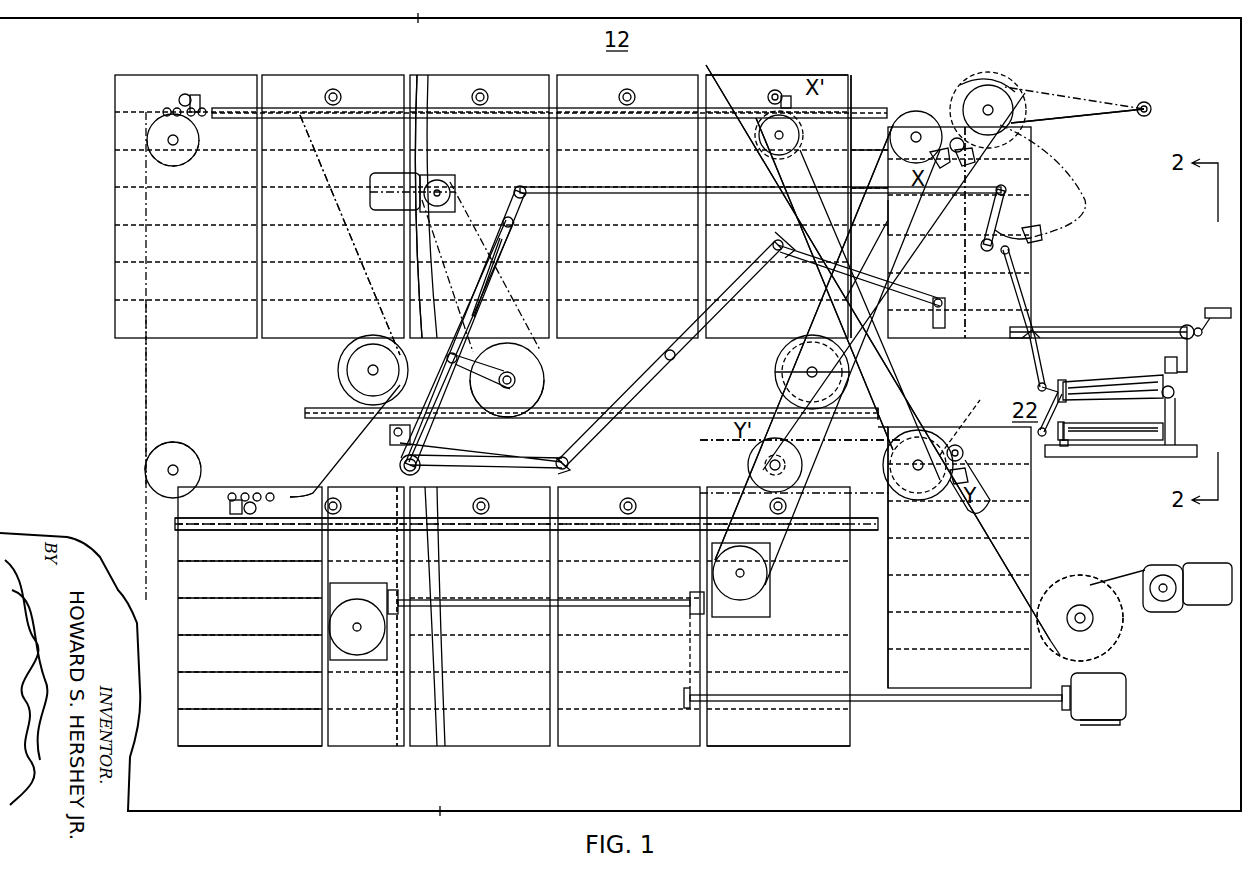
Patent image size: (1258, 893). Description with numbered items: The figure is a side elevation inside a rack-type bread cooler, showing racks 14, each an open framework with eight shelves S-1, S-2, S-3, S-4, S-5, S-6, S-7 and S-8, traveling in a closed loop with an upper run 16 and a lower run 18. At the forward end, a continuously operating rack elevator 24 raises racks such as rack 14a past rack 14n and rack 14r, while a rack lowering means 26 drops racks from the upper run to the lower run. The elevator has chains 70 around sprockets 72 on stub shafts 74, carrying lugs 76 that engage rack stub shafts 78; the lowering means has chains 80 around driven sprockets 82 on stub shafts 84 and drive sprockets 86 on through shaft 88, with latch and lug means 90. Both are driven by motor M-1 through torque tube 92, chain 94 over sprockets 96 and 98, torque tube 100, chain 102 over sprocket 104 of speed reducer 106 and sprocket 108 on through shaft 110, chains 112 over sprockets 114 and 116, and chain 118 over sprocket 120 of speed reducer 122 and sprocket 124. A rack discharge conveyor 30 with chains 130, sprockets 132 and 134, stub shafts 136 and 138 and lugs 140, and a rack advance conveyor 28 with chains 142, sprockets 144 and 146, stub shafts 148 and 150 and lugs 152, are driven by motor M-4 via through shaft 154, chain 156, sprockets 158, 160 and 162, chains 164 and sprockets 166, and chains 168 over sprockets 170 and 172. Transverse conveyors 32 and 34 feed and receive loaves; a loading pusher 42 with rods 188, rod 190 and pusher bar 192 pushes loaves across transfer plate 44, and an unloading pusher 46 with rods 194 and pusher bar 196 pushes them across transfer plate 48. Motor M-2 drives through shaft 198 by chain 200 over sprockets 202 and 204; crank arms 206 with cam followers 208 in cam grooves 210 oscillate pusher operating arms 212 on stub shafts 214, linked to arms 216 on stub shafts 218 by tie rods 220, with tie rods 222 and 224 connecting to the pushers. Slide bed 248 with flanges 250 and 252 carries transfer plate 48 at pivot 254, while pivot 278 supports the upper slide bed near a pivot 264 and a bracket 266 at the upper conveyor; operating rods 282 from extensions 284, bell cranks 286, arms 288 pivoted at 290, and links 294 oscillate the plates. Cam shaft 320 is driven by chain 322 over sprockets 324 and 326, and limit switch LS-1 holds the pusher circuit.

The racks 14 is at (825, 68).
The rack 14a is at (1022, 152).
The rack 14n is at (889, 710).
The panel 14r is at (776, 746).
The upper horizontal longitudinally extending run 16 is at (519, 103).
The lower horizontal longitudinally extending run 18 is at (587, 516).
The rack elevator 24 is at (1094, 172).
The rack lowering means 26 is at (137, 390).
The rack advance conveyor 28 is at (870, 420).
The rack discharge conveyor 30 is at (886, 101).
The upper conveyor 32 is at (1129, 375).
The lower conveyor 34 is at (1118, 441).
The loading pusher 42 is at (1080, 321).
The transfer plate 44 is at (1032, 338).
The unloading pusher 46 is at (677, 403).
The transfer plate 48 is at (1046, 432).
The endless chains 70 is at (968, 250).
The sprockets 72 is at (1010, 95).
The stub shafts 74 is at (986, 106).
The lugs 76 is at (968, 158).
The rack stub shafts 78 is at (190, 96).
The endless chains 80 is at (352, 237).
The driven sprockets 82 is at (190, 158).
The stub shafts 84 is at (168, 137).
The drive sprockets 86 is at (350, 370).
The through shaft 88 is at (368, 373).
The latch and lug means 90 is at (172, 107).
The torque tube 92 is at (972, 702).
The chain 94 is at (688, 642).
The sprocket 96 is at (684, 696).
The sprocket 98 is at (690, 598).
The torque tube 100 is at (586, 600).
The chain 102 is at (790, 535).
The sprocket 104 is at (766, 560).
The speed reducer 106 is at (770, 606).
The sprocket 108 is at (795, 355).
The through shaft 110 is at (810, 372).
The chains 112 is at (888, 222).
The sprockets 114 is at (832, 370).
The sprockets 116 is at (1000, 80).
The chain 118 is at (395, 537).
The sprocket 120 is at (378, 591).
The speed reducer 122 is at (340, 655).
The sprocket 124 is at (350, 345).
The endless chains 130 is at (882, 162).
The rearward drive sprockets 132 is at (757, 138).
The forward driven sprockets 134 is at (932, 110).
The stub shafts 136 is at (776, 140).
The stub shafts 138 is at (914, 132).
The lugs 140 is at (778, 90).
The endless chains 142 is at (810, 440).
The rearward driven sprockets 144 is at (772, 468).
The forward drive sprockets 146 is at (958, 445).
The stub shafts 148 is at (780, 462).
The stub shafts 150 is at (911, 450).
The lugs 152 is at (790, 450).
The through shaft 154 is at (1080, 574).
The chain 156 is at (1135, 572).
The sprocket 158 is at (1165, 577).
The sprocket 160 is at (1108, 637).
The sprockets 162 is at (1093, 622).
The chains 164 is at (1033, 548).
The sprockets 166 is at (892, 465).
The chains 168 is at (905, 365).
The sprockets 170 is at (908, 490).
The sprockets 172 is at (728, 95).
The rods 188 is at (1118, 330).
The rod 190 is at (1183, 326).
The pusher bar 192 is at (1166, 362).
The rods 194 is at (562, 404).
The pusher bar 196 is at (934, 305).
The through shaft 198 is at (540, 372).
The chain 200 is at (420, 250).
The sprocket 202 is at (446, 180).
The sprocket 204 is at (548, 378).
The crank arms 206 is at (481, 395).
The cam followers 208 is at (458, 355).
The cam grooves 210 is at (478, 300).
The pusher operating arms 212 is at (516, 241).
The stub shafts 214 is at (514, 220).
The pusher operating arms 216 is at (740, 305).
The stub shafts 218 is at (668, 350).
The tie rods 220 is at (405, 472).
The tie rods 222 is at (882, 300).
The tie rods 224 is at (582, 456).
The belt slide bed 248 is at (1115, 437).
The flanged portion 250 is at (1165, 446).
The flanged portion 252 is at (1075, 447).
The pivotal connection 254 is at (962, 468).
The pivot 264 is at (1176, 390).
The bracket 266 is at (1072, 380).
The pivotal connection 278 is at (1174, 396).
The operating rods 282 is at (676, 187).
The extensions 284 is at (516, 186).
The bell crank assemblies 286 is at (1010, 232).
The operating arms 288 is at (1027, 300).
The pivotal connection 290 is at (1040, 384).
The links 294 is at (1048, 398).
The cam shaft 320 is at (1150, 105).
The sprocket chain 322 is at (1100, 96).
The sprocket 324 is at (1058, 82).
The sprocket 326 is at (1150, 113).
The gear head reduction motor M-1 is at (1100, 705).
The gear head reduction motor M-2 is at (382, 174).
The gear head reduction motor M-4 is at (1212, 605).
The limit switch LS-1 is at (1215, 308).
The shelf S-1 is at (300, 490).
The shelf S-2 is at (200, 524).
The shelf S-3 is at (285, 561).
The shelf S-4 is at (285, 598).
The shelf S-5 is at (285, 635).
The shelf S-6 is at (285, 672).
The shelf S-7 is at (285, 709).
The shelf S-8 is at (290, 746).